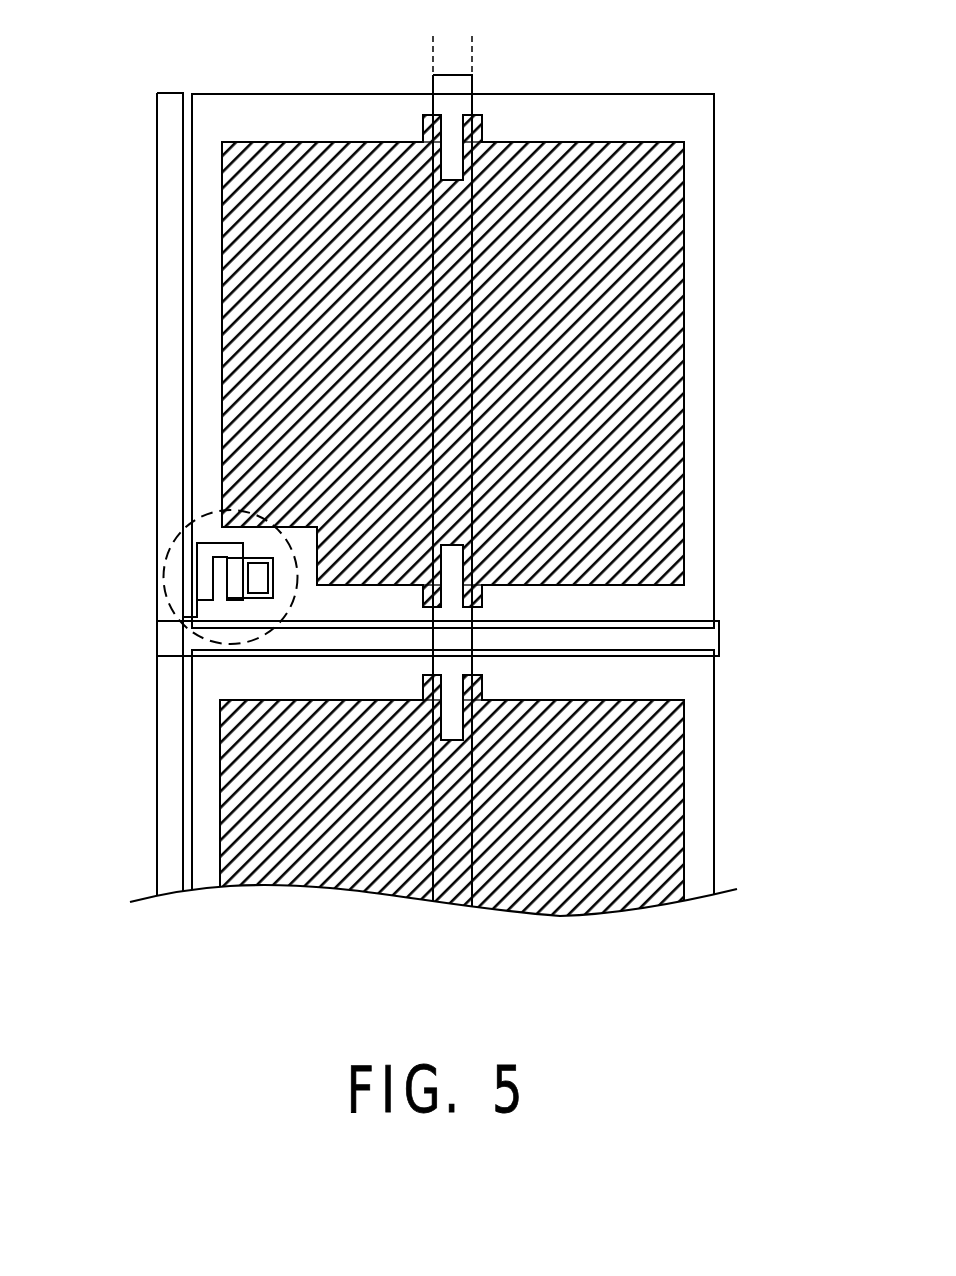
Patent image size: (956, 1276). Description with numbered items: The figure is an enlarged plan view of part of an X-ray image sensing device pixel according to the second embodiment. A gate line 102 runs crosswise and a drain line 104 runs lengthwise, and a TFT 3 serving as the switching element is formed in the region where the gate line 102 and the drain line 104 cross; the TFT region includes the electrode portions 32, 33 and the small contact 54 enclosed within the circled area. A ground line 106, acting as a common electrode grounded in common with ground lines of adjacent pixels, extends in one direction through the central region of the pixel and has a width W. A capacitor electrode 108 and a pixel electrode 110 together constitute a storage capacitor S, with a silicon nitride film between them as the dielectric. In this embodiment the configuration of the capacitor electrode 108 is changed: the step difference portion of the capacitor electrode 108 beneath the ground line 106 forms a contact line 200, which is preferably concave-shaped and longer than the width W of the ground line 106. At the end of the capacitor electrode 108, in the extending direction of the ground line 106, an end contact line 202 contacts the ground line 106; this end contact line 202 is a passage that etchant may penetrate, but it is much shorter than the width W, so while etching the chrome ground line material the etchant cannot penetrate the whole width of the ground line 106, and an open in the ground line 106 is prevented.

The TFT 3 is at (167, 602).
The source electrode 32 is at (207, 583).
The drain electrode 33 is at (237, 567).
The contact hole 54 is at (258, 593).
The gate line 102 is at (714, 640).
The drain line 104 is at (167, 327).
The ground line 106 is at (467, 83).
The capacitor electrode 108 is at (511, 527).
The pixel electrode 110 is at (714, 158).
The contact line 200 is at (482, 124).
The end contact line 202 is at (438, 114).
The storage capacitor S is at (630, 482).
The width of the ground line W is at (433, 33).